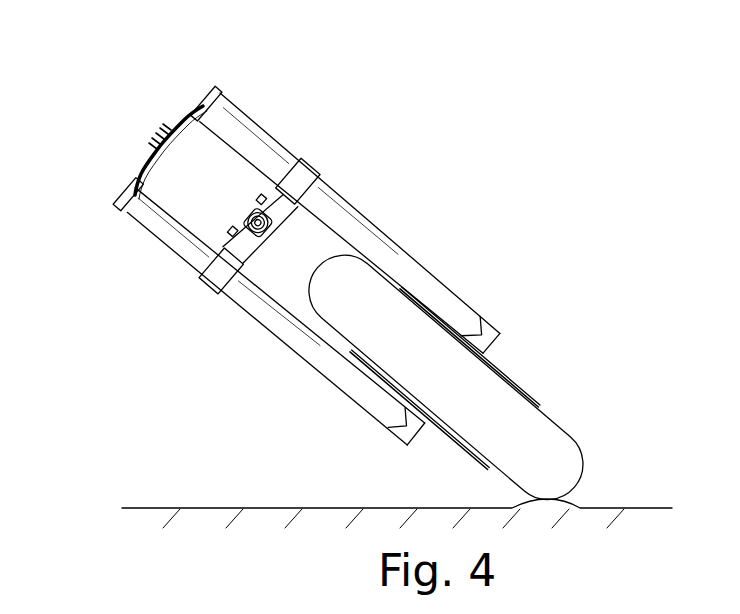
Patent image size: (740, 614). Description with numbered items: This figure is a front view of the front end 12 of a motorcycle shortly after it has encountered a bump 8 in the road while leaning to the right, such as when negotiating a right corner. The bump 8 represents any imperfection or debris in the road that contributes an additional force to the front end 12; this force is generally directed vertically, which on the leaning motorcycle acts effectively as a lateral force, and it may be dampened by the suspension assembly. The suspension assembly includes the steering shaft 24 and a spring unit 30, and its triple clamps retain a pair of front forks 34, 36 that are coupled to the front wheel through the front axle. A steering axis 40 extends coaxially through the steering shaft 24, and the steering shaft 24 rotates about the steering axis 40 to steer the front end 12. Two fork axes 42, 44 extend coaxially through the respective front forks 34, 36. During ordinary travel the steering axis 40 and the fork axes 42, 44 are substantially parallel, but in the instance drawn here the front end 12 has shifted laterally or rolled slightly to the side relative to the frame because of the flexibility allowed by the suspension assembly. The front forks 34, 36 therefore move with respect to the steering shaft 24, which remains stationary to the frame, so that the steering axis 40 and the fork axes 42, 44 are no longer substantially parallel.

The bump 8 is at (590, 486).
The front end 12 is at (503, 154).
The steering shaft 24 is at (217, 190).
The spring unit 30 is at (153, 147).
The front fork 34 is at (325, 359).
The front fork 36 is at (425, 282).
The steering axis 40 is at (158, 121).
The fork axis 42 is at (117, 183).
The fork axis 44 is at (195, 92).